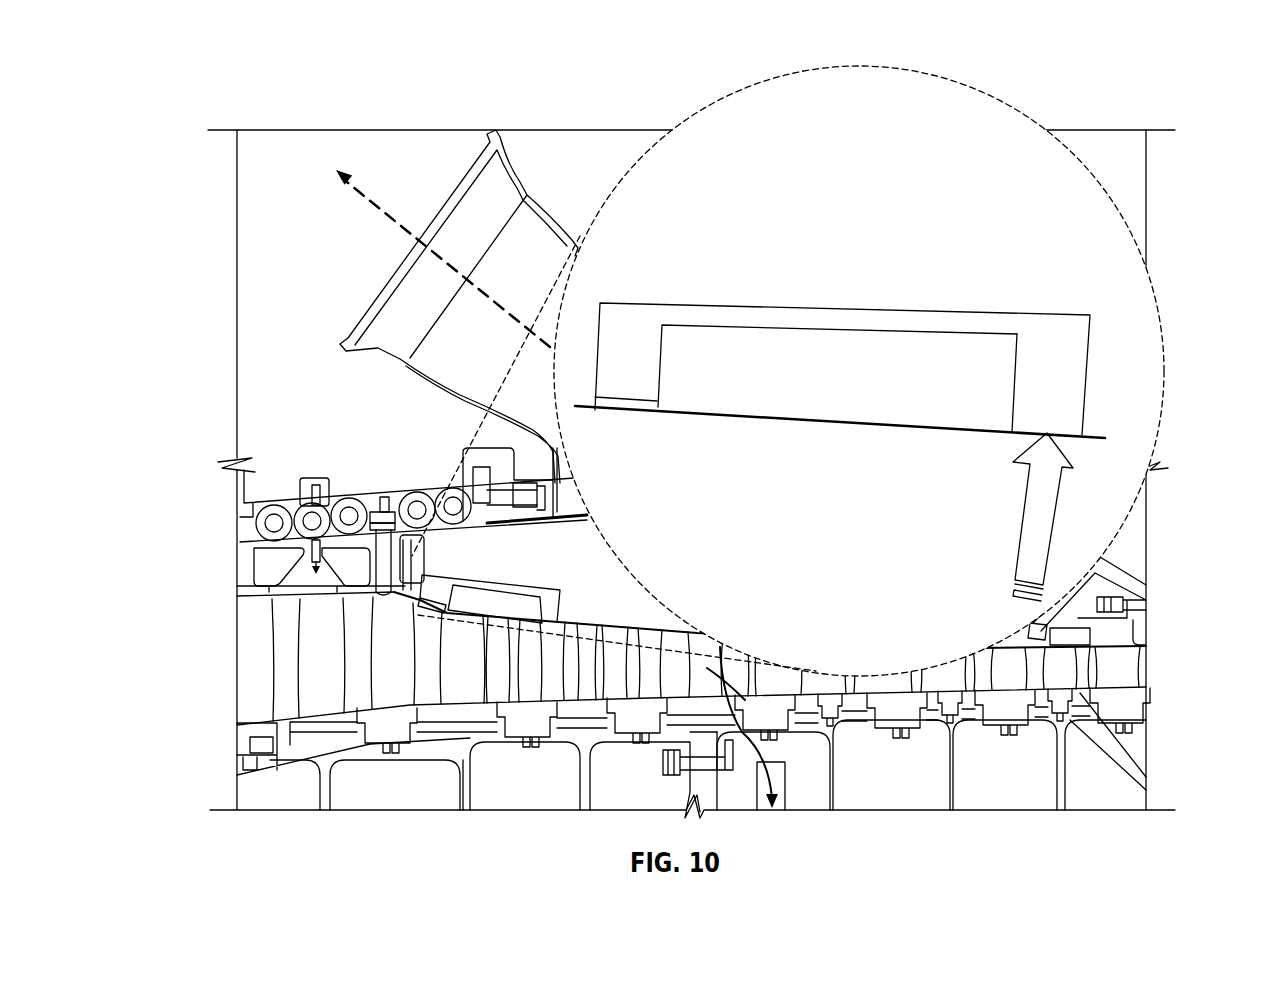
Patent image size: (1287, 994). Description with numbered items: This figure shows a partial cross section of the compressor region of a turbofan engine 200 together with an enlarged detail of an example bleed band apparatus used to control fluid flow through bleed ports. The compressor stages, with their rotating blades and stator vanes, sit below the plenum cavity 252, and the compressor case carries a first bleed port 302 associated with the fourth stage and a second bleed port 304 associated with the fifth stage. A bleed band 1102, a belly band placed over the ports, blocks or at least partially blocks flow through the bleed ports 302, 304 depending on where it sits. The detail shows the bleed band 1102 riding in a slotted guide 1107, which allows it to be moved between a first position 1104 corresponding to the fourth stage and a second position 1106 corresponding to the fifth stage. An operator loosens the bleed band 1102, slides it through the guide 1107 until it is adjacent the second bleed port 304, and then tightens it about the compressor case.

The turbofan engine 200 is at (243, 112).
The plenum cavity 252 is at (427, 562).
The first bleed port 302 is at (425, 617).
The second bleed port 304 is at (558, 630).
The bleed band 1102 is at (820, 438).
The first position 1104 is at (658, 405).
The second position 1106 is at (1012, 432).
The slotted guide 1107 is at (710, 304).